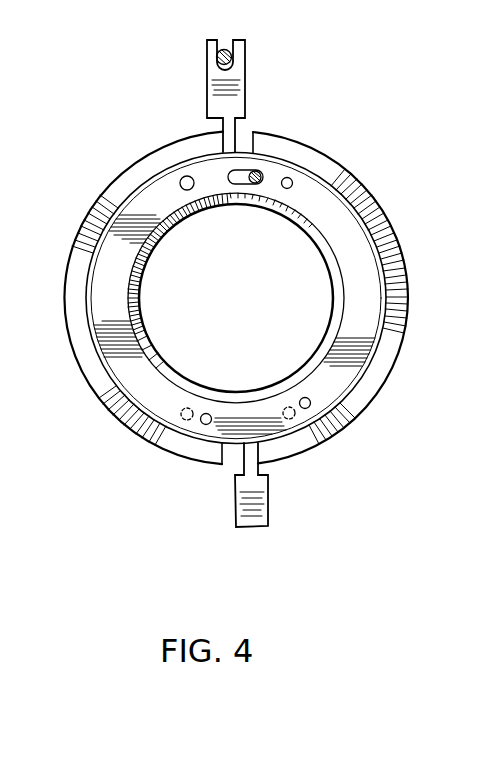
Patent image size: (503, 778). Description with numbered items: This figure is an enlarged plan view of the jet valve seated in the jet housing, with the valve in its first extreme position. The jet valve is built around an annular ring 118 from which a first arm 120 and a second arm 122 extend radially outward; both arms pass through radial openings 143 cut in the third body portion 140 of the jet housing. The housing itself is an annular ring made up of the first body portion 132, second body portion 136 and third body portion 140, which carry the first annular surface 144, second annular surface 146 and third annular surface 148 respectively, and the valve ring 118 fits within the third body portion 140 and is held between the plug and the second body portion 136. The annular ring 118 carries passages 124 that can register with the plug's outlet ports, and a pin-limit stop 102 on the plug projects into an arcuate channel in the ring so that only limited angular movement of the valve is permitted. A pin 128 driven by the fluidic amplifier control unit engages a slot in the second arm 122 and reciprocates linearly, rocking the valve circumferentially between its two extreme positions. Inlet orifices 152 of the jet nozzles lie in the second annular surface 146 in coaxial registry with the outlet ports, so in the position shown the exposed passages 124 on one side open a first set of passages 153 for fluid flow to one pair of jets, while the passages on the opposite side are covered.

The pin-limit stop 102 is at (262, 174).
The annular ring 118 is at (276, 278).
The first arm 120 is at (263, 90).
The second arm 122 is at (265, 514).
The passages 124 is at (207, 414).
The pin 128 is at (230, 57).
The first body portion 132 is at (333, 255).
The second body portion 136 is at (383, 278).
The third body portion 140 is at (400, 332).
The radial openings 143 is at (245, 137).
The first annular surface 144 is at (348, 322).
The second annular surface 146 is at (387, 296).
The third annular surface 148 is at (387, 363).
The inlet orifice 152 is at (183, 418).
The first set of passages 153 is at (187, 176).